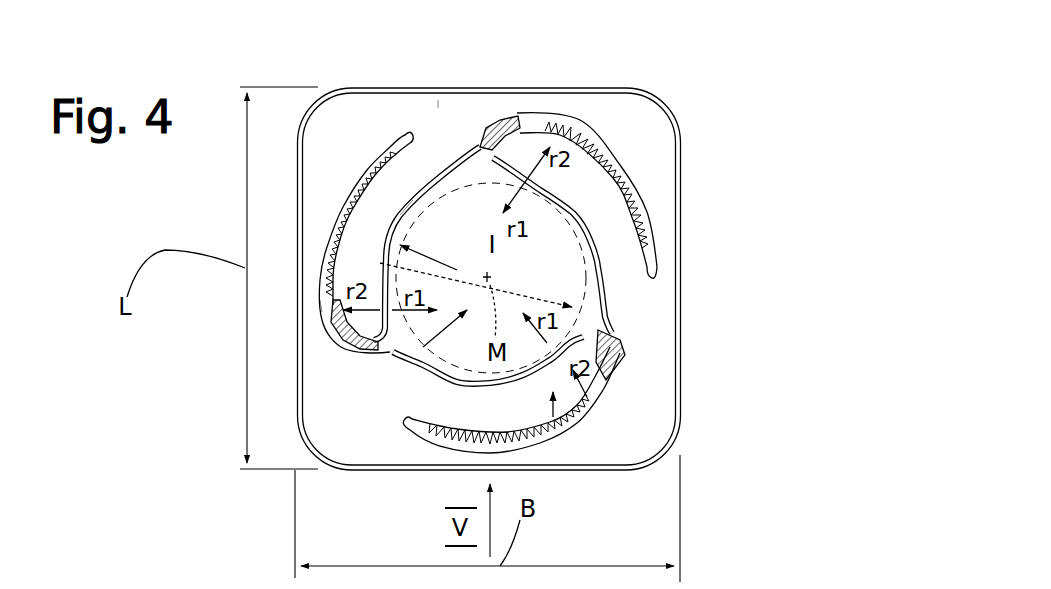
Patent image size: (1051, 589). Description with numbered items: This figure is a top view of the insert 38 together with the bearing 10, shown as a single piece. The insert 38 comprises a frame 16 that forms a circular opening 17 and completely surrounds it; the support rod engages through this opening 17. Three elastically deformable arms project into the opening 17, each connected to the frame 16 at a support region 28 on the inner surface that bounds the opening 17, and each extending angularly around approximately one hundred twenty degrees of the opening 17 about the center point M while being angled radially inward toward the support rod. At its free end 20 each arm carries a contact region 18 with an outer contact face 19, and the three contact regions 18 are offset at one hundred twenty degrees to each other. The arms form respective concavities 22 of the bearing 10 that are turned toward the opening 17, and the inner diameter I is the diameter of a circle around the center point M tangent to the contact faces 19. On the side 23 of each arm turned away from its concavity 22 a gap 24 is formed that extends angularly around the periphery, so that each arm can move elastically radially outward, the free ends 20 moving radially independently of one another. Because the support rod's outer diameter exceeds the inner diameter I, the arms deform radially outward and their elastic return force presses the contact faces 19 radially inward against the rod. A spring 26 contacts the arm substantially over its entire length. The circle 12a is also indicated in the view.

The bearing 10 is at (712, 245).
The inner circle 12a is at (465, 350).
The frame 16 is at (662, 170).
The opening 17 is at (425, 368).
The contact region 18 is at (600, 152).
The outer contact face 19 is at (428, 195).
The free end 20 is at (550, 120).
The concavity 22 is at (427, 197).
The side 23 is at (367, 155).
The gap 24 is at (632, 172).
The spring 26 is at (490, 122).
The support region 28 is at (438, 107).
The insert 38 is at (308, 98).